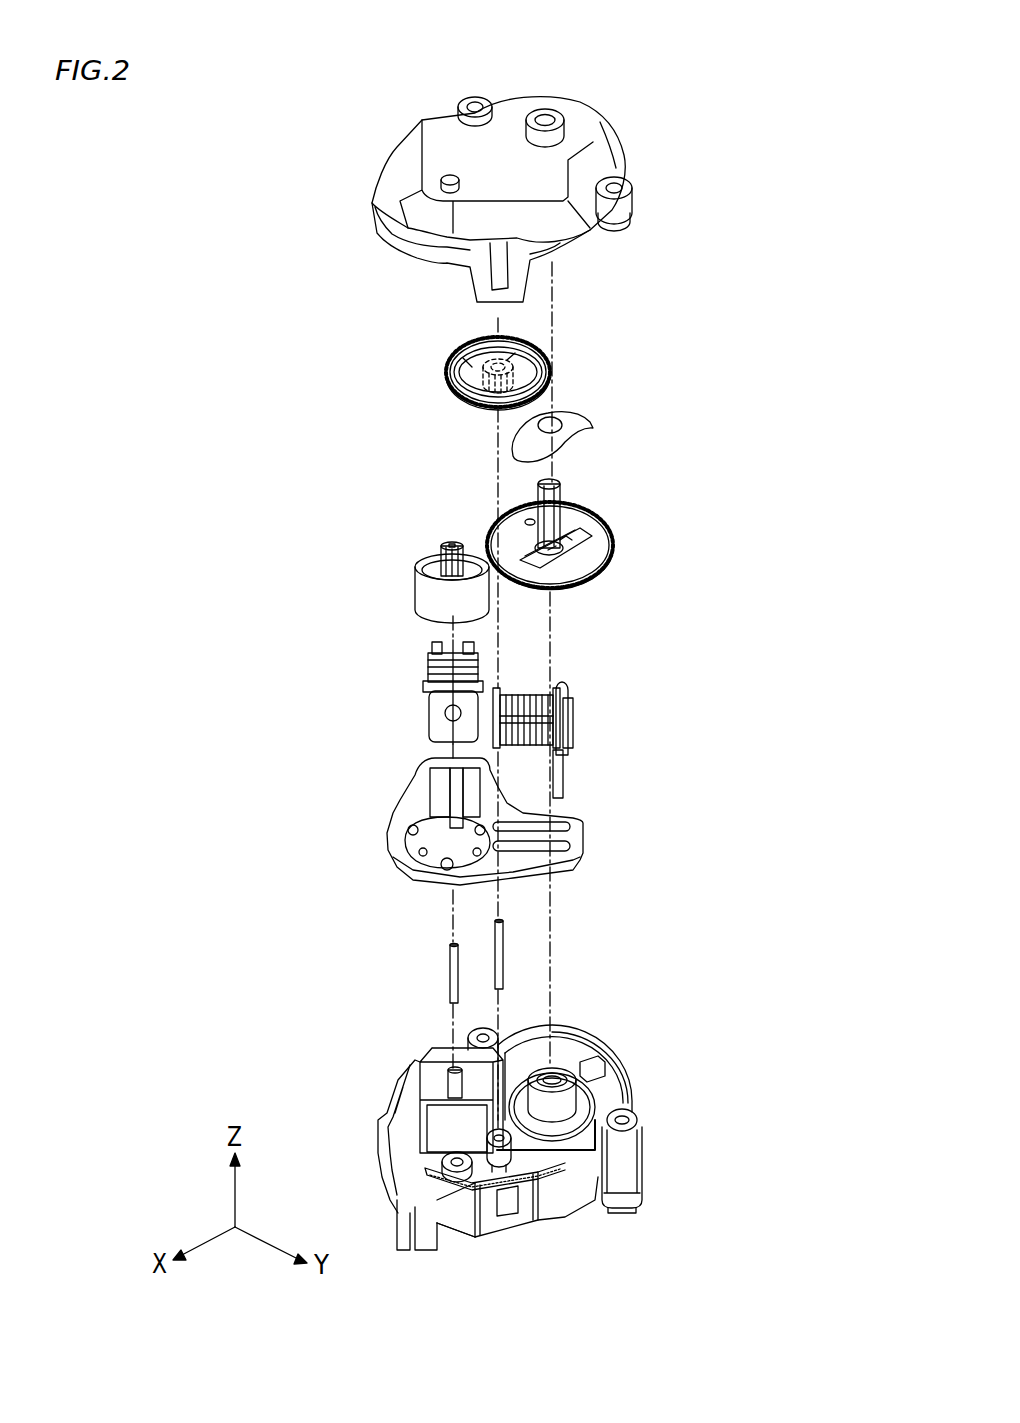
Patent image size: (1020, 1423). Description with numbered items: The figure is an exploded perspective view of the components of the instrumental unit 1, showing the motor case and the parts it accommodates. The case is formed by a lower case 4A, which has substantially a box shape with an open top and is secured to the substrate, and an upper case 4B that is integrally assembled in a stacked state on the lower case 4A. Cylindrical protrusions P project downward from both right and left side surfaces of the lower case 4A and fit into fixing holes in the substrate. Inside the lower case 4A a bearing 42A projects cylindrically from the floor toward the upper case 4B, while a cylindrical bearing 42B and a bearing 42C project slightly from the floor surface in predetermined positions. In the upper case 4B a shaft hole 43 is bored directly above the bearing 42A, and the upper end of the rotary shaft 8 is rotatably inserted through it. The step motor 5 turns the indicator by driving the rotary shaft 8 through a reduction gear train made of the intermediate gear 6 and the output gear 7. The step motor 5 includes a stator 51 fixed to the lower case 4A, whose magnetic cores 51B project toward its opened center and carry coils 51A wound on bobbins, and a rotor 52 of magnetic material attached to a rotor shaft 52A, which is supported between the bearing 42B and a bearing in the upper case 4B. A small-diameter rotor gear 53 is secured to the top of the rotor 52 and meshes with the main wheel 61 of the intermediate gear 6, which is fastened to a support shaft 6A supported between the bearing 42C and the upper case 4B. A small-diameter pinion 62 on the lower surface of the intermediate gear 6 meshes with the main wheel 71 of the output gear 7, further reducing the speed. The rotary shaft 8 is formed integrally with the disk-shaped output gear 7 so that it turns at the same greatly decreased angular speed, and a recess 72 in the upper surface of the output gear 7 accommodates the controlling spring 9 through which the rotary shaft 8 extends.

The motor unit 1 is at (345, 81).
The upper case 4B is at (614, 120).
The shaft hole 43 is at (546, 109).
The intermediate gear 6 is at (462, 368).
The main wheel 61 is at (458, 396).
The pinion 62 is at (540, 342).
The controlling spring 9 is at (592, 424).
The rotary shaft 8 is at (526, 512).
The output gear 7 is at (603, 567).
The main wheel 71 is at (614, 548).
The recess 72 is at (530, 548).
The rotor gear 53 is at (422, 563).
The rotor 52 is at (427, 603).
The step motor 5 is at (282, 680).
The coils 51A is at (498, 722).
The stator 51 is at (405, 820).
The magnetic cores 51B is at (450, 790).
The rotor shaft 52A is at (450, 962).
The support shaft 6A is at (503, 948).
The lower case 4A is at (636, 1092).
The bearing 42A is at (565, 1105).
The bearing 42B is at (462, 1180).
The bearing 42C is at (510, 1192).
The cylindrical protrusions P is at (468, 1037).